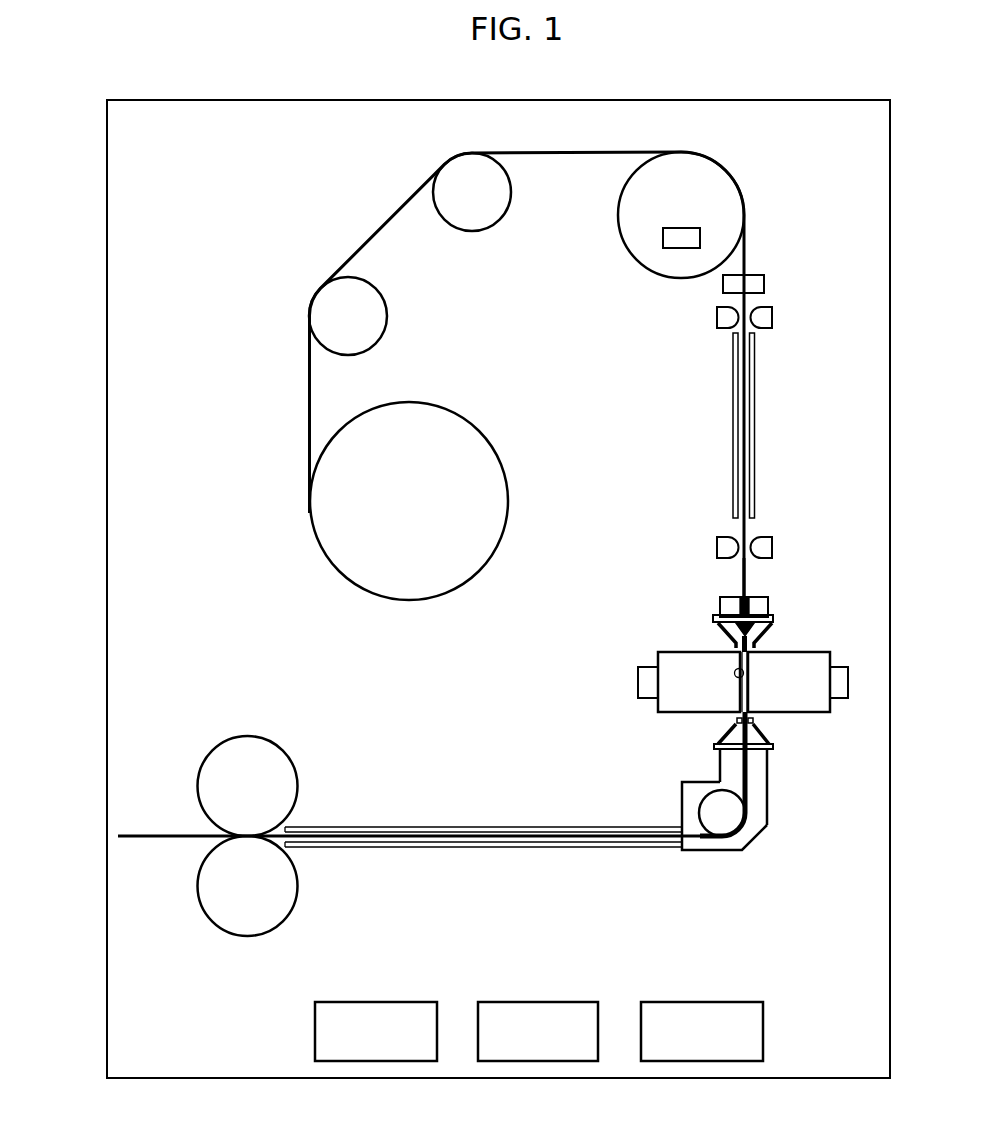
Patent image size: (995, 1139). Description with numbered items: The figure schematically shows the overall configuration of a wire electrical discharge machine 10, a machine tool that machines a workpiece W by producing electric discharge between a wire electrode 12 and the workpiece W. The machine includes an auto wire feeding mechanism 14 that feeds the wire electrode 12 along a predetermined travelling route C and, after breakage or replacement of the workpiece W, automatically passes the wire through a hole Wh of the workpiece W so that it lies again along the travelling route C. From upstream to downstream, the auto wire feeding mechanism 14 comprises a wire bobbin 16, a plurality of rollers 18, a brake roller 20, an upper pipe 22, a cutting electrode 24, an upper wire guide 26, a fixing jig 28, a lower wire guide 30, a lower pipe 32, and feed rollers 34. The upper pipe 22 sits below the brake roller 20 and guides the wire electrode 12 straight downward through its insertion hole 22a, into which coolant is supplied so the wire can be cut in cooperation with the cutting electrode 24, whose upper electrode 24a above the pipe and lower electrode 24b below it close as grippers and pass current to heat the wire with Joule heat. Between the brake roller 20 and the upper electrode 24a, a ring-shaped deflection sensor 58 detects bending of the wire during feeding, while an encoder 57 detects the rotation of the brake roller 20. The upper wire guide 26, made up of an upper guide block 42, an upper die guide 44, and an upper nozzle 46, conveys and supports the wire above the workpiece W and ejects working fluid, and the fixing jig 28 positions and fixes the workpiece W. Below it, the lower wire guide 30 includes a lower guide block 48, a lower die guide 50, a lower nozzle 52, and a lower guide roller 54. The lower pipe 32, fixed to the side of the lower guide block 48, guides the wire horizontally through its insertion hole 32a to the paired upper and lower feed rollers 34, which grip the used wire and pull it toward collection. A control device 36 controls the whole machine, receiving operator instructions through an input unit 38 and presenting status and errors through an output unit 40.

The wire electrical discharge machine 10 is at (651, 98).
The wire electrode 12 is at (308, 384).
The auto wire feeding mechanism 14 is at (311, 219).
The wire bobbin 16 is at (428, 423).
The rollers 18 is at (469, 218).
The brake roller 20 is at (657, 202).
The upper pipe 22 is at (775, 425).
The insertion hole 22a is at (747, 379).
The cutting electrode 24 is at (686, 432).
The upper electrode 24a is at (721, 322).
The lower electrode 24b is at (721, 545).
The upper wire guide 26 is at (694, 601).
The fixing jig 28 is at (699, 655).
The lower wire guide 30 is at (783, 788).
The lower pipe 32 is at (483, 812).
The insertion hole 32a is at (414, 833).
The feed rollers 34 is at (262, 738).
The control device 36 is at (375, 1002).
The input unit 38 is at (520, 1002).
The output unit 40 is at (698, 1002).
The upper guide block 42 is at (735, 603).
The upper die guide 44 is at (734, 618).
The upper nozzle 46 is at (717, 632).
The lower guide block 48 is at (758, 808).
The lower die guide 50 is at (758, 749).
The lower nozzle 52 is at (765, 732).
The lower guide roller 54 is at (768, 824).
The encoder 57 is at (680, 246).
The deflection sensor 58 is at (752, 285).
The travelling route C is at (770, 578).
The workpiece W is at (790, 652).
The hole Wh is at (745, 676).